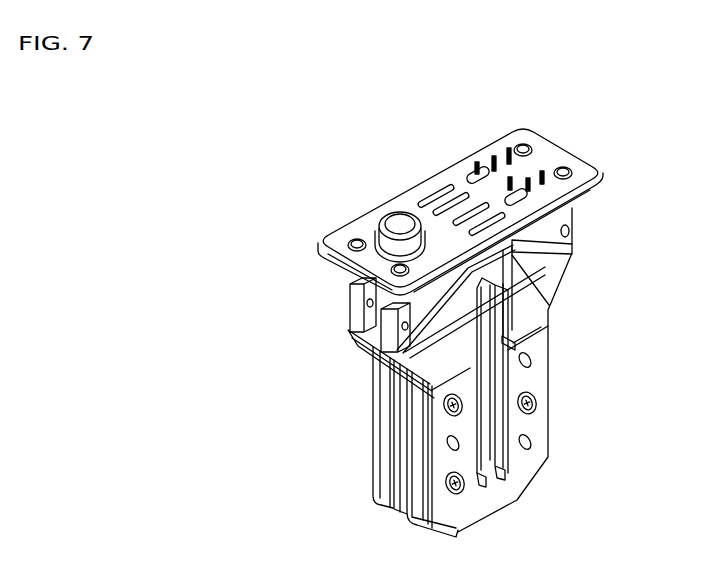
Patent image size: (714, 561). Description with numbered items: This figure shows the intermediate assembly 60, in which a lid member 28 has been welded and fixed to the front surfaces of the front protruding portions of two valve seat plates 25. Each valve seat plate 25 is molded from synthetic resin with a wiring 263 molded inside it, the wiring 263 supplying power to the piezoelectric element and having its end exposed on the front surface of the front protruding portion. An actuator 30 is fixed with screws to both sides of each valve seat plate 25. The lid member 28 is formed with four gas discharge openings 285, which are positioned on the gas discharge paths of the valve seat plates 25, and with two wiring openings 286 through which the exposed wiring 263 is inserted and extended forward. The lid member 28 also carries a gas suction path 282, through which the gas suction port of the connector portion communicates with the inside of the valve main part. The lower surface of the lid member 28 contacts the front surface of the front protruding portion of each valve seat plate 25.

The intermediate assembly 60 is at (274, 145).
The lid member 28 is at (556, 157).
The gas suction path 282 is at (400, 224).
The gas discharge opening 285 is at (448, 204).
The wiring 263 is at (478, 171).
The wiring opening 286 is at (481, 165).
The valve seat plate 25 is at (354, 302).
The actuator 30 is at (535, 377).